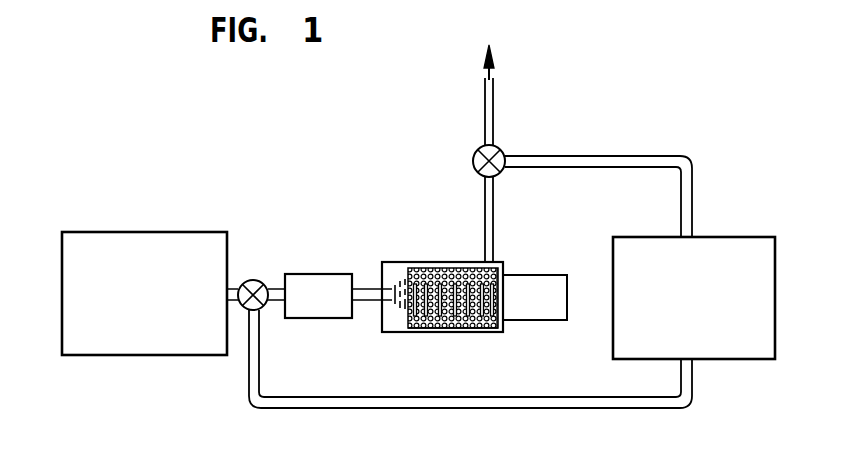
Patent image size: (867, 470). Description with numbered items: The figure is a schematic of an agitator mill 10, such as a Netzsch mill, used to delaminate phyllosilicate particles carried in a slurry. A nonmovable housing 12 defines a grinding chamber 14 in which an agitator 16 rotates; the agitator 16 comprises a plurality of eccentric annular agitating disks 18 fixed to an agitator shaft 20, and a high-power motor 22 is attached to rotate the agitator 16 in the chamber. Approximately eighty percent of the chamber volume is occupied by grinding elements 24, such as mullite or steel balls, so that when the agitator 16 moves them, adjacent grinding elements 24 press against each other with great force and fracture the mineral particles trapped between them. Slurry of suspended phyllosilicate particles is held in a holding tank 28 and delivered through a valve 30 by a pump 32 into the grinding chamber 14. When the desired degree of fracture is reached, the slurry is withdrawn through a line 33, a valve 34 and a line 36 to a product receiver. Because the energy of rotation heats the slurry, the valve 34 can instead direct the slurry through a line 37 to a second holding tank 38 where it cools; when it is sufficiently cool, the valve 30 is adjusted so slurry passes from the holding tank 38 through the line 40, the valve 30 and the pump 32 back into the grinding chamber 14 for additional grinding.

The agitator mill 10 is at (459, 298).
The housing 12 is at (383, 333).
The grinding chamber 14 is at (426, 272).
The agitator 16 is at (446, 272).
The eccentric annular agitating disks 18 is at (451, 327).
The agitator shaft 20 is at (471, 322).
The high-power motor 22 is at (534, 274).
The grinding elements 24 is at (492, 333).
The holding tank 28 is at (152, 238).
The valve 30 is at (253, 280).
The pump 32 is at (302, 274).
The line 33 is at (494, 222).
The valve 34 is at (500, 149).
The line 36 is at (495, 105).
The line 37 is at (643, 155).
The holding tank 38 is at (733, 237).
The line 40 is at (368, 408).